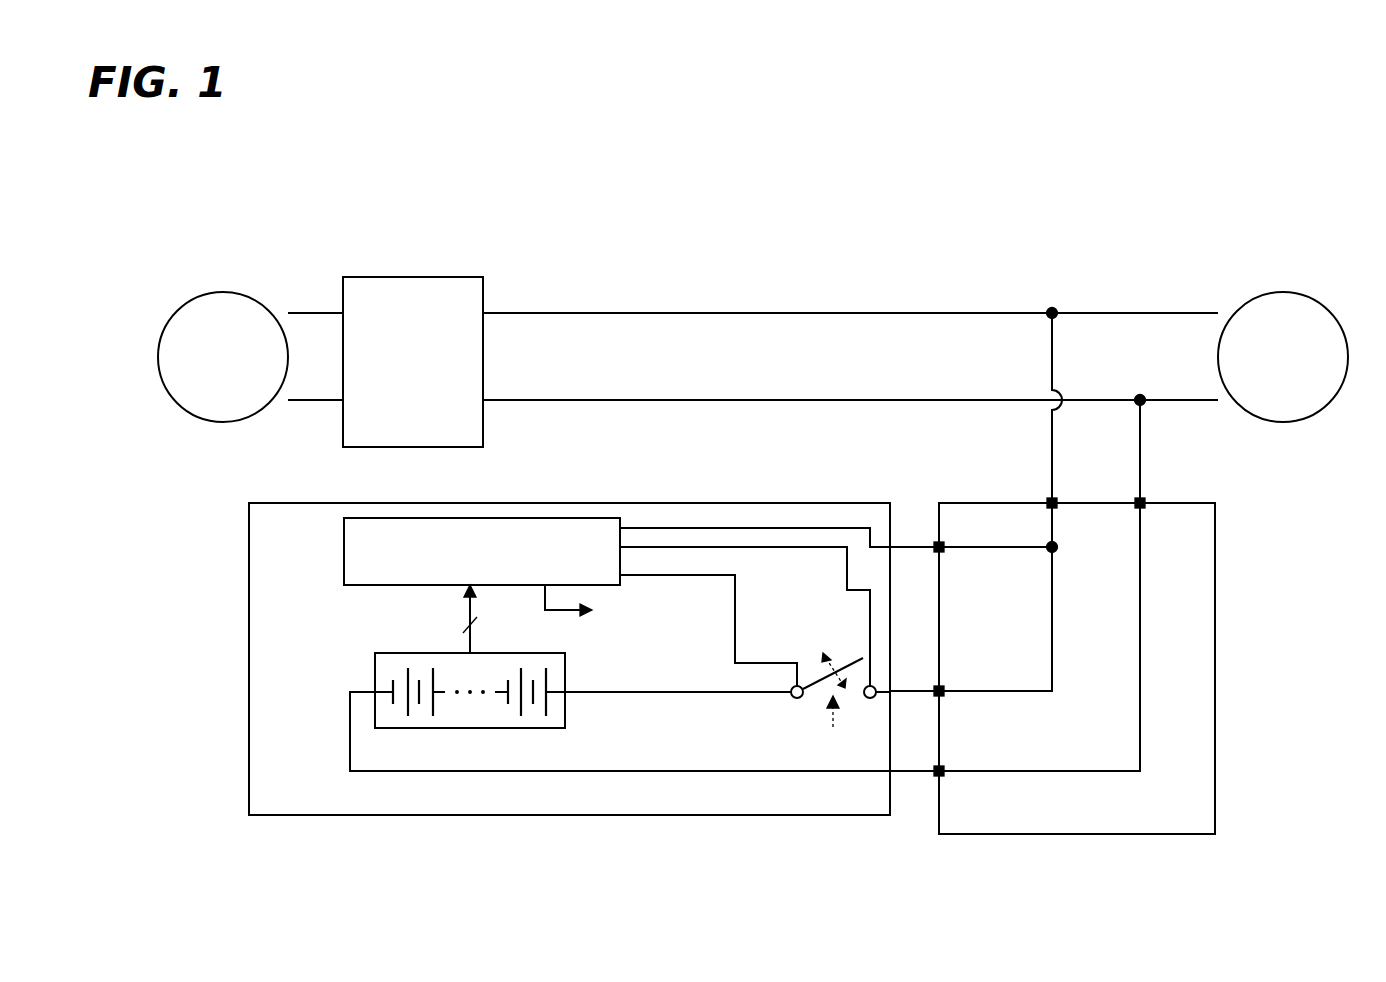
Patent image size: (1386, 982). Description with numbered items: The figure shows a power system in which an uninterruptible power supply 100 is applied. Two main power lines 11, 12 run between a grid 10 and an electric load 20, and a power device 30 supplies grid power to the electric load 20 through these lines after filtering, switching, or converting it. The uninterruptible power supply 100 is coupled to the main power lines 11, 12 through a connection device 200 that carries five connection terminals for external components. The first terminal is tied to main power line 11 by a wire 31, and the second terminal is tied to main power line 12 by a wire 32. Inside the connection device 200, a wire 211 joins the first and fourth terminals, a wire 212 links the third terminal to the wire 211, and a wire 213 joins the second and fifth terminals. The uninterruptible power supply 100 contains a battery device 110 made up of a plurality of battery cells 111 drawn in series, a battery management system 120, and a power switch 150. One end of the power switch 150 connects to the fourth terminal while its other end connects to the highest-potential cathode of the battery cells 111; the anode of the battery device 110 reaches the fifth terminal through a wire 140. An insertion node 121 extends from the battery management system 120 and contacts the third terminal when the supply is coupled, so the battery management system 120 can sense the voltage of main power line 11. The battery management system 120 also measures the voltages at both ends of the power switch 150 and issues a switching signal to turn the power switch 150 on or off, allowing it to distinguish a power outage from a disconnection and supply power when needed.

The grid 10 is at (223, 291).
The electric load 20 is at (1283, 291).
The power device 30 is at (413, 277).
The main power line 11 is at (750, 312).
The main power line 12 is at (750, 399).
The wire 31 is at (1055, 350).
The wire 32 is at (1143, 440).
The uninterruptible power supply 100 is at (248, 775).
The battery device 110 is at (438, 708).
The battery cell 111 is at (507, 721).
The battery management system 120 is at (343, 550).
The insertion node 121 is at (771, 527).
The wire 140 is at (425, 773).
The power switch 150 is at (794, 718).
The connection device 200 is at (1216, 691).
The wire 211 is at (1055, 587).
The wire 212 is at (970, 545).
The wire 213 is at (1143, 587).